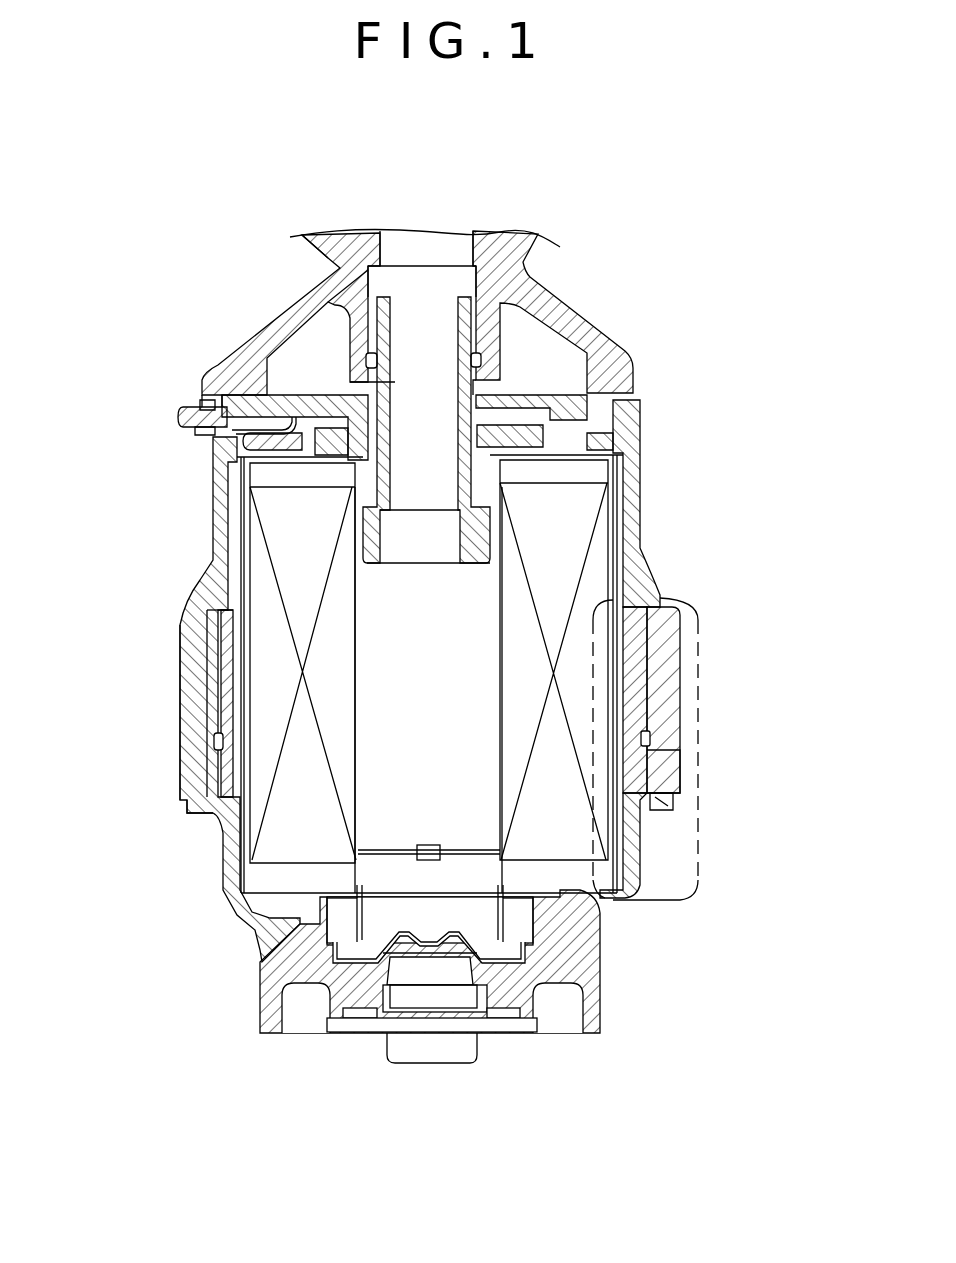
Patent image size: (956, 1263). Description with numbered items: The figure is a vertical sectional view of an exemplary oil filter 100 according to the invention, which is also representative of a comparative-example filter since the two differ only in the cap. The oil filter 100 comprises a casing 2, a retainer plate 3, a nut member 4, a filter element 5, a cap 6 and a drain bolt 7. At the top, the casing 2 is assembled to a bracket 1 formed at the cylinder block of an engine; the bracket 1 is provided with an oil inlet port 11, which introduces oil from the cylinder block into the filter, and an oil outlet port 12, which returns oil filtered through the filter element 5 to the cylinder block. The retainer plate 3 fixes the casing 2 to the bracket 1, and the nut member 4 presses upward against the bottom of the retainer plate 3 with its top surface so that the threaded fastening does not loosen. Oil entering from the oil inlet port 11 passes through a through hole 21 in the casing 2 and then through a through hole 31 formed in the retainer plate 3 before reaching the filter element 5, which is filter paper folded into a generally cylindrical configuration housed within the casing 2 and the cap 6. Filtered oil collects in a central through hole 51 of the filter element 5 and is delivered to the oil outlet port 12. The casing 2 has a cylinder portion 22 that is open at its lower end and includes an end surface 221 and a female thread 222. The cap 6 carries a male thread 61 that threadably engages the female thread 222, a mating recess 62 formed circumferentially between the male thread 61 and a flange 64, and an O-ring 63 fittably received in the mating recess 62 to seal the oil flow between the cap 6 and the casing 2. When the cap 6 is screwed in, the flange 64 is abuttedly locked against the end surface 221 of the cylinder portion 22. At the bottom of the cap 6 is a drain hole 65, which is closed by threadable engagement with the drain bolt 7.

The oil filter 100 is at (193, 139).
The bracket 1 is at (326, 260).
The oil inlet port 11 is at (312, 301).
The oil outlet port 12 is at (433, 330).
The through hole 21 is at (296, 378).
The retainer plate 3 is at (260, 460).
The through hole 31 is at (290, 490).
The casing 2 is at (220, 567).
The cylinder portion 22 is at (190, 672).
The end surface 221 is at (195, 812).
The female thread 222 is at (645, 640).
The nut member 4 is at (477, 540).
The filter element 5 is at (290, 835).
The through hole 51 is at (413, 720).
The cap 6 is at (275, 938).
The male thread 61 is at (647, 680).
The mating recess 62 is at (653, 767).
The O-ring 63 is at (647, 737).
The flange 64 is at (662, 808).
The drain hole 65 is at (463, 1003).
The drain bolt 7 is at (360, 1033).